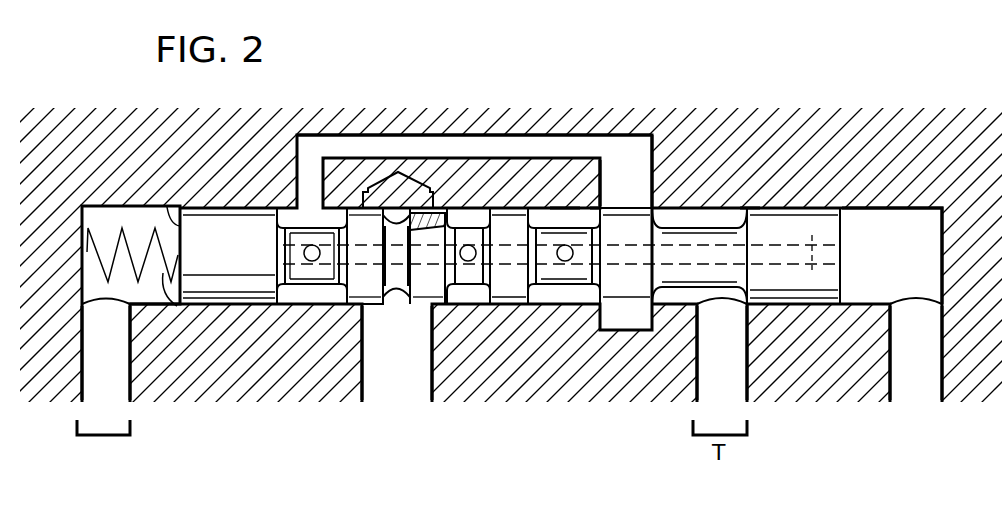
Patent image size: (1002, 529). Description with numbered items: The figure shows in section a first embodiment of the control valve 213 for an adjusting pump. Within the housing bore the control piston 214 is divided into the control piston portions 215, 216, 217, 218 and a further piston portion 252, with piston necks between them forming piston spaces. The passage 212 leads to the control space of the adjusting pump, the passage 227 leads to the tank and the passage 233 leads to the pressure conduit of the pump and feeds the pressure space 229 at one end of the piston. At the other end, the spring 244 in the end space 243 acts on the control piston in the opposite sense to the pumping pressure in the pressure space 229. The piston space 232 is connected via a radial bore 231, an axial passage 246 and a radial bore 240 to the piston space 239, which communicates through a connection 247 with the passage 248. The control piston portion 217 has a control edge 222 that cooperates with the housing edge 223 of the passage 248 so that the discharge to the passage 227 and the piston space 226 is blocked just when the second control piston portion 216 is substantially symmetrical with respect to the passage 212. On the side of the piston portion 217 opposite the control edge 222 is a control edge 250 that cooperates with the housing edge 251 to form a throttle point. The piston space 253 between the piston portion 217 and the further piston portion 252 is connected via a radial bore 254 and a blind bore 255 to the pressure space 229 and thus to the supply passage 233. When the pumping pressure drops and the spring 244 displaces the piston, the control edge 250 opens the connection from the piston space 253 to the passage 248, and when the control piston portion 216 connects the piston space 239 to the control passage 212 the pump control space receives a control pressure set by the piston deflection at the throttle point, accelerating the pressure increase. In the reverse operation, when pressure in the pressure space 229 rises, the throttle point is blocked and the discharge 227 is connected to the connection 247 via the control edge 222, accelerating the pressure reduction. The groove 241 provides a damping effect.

The passage 212 is at (415, 390).
The control valve 213 is at (106, 200).
The control piston 214 is at (164, 205).
The control piston portion 215 is at (238, 252).
The second control piston portion 216 is at (356, 220).
The control piston portion 217 is at (632, 285).
The control piston portion 218 is at (808, 248).
The control edge 222 is at (668, 210).
The housing edge 223 is at (650, 183).
The piston space 226 is at (740, 208).
The passage 227 is at (748, 384).
The pressure space 229 is at (903, 225).
The radial bore 231 is at (469, 263).
The piston space 232 is at (462, 210).
The passage 233 is at (942, 385).
The piston space 239 is at (283, 210).
The radial bore 240 is at (312, 262).
The groove 241 is at (443, 207).
The end space 243 is at (145, 300).
The spring 244 is at (165, 276).
The axial passage 246 is at (452, 280).
The connection 247 is at (400, 145).
The passage 248 is at (643, 140).
The control edge 250 is at (565, 215).
The housing edge 251 is at (600, 205).
The further piston portion 252 is at (515, 292).
The piston space 253 is at (553, 296).
The radial bore 254 is at (566, 263).
The blind bore 255 is at (812, 270).